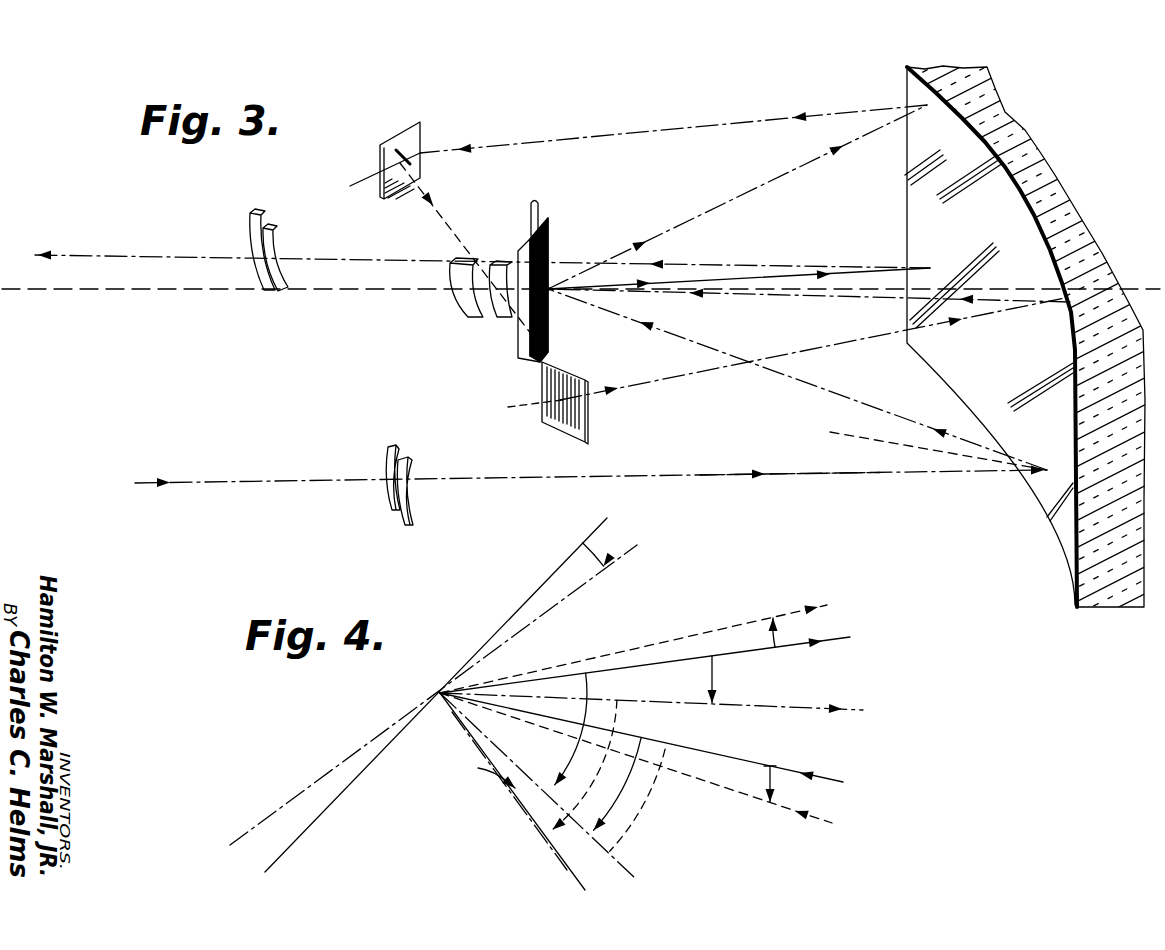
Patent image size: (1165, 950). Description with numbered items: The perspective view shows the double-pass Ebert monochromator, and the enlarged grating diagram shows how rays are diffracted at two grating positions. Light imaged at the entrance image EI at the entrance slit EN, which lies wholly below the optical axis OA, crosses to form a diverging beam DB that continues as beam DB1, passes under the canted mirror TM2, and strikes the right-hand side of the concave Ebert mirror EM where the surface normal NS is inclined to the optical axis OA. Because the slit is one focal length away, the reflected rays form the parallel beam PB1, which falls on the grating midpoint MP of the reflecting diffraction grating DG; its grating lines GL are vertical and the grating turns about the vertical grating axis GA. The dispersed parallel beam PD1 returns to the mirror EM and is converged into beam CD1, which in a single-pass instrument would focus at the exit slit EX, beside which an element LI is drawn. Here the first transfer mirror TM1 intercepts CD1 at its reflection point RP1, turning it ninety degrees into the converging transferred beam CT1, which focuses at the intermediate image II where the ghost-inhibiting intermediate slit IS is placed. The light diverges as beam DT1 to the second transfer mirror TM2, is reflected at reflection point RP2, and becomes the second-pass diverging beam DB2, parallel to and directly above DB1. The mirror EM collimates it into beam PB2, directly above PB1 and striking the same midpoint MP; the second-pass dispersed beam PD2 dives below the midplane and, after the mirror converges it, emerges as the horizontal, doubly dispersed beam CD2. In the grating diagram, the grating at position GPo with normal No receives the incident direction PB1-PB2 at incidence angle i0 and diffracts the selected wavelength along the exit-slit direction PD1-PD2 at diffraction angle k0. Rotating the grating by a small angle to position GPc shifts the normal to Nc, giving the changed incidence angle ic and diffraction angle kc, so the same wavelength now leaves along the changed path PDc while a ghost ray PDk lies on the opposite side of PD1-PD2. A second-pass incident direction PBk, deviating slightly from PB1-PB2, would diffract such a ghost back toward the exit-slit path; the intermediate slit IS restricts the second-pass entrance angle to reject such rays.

In FIG. 3, the Ebert mirror EM is at (1012, 118).
In FIG. 3, the optical axis OA is at (58, 290).
In FIG. 3, the converging dispersed beam CD1 is at (598, 133).
In FIG. 3, the converging doubly dispersed beam CD2 is at (128, 256).
In FIG. 3, the first-pass parallel dispersed beam PD1 is at (732, 198).
In FIG. 3, the second-pass parallel dispersed beam PD2 is at (773, 282).
In FIG. 3, the first-pass parallel beam PB1 is at (808, 388).
In FIG. 3, the second-pass parallel beam PB2 is at (820, 298).
In FIG. 3, the diverging beam DB is at (218, 487).
In FIG. 3, the first-pass diverging beam DB1 is at (812, 476).
In FIG. 3, the second-pass diverging beam DB2 is at (689, 374).
In FIG. 3, the normal to the mirror surface NS is at (923, 453).
In FIG. 3, the first transfer mirror TM1 is at (392, 140).
In FIG. 3, the second transfer mirror TM2 is at (590, 425).
In FIG. 3, the reflection point of the first transfer mirror RP1 is at (376, 169).
In FIG. 3, the reflection point of the second transfer mirror RP2 is at (515, 408).
In FIG. 3, the converging transferred first beam CT1 is at (442, 214).
In FIG. 3, the diverging transferred beam DT1 is at (500, 338).
In FIG. 3, the exit slit EX is at (245, 217).
In FIG. 3, the exit lens LI is at (272, 224).
In FIG. 3, the intermediate image II is at (470, 262).
In FIG. 3, the intermediate slit IS is at (455, 305).
In FIG. 3, the entrance image EI is at (402, 453).
In FIG. 3, the entrance slit EN is at (390, 508).
In FIG. 3, the grating axis GA is at (531, 212).
In FIG. 3, the diffraction grating DG is at (549, 236).
In FIG. 3, the grating lines GL is at (553, 264).
In FIG. 3, the grating midpoint MP is at (552, 306).
In FIG. 4, the original grating position GPo is at (292, 843).
In FIG. 4, the changed grating position GPc is at (296, 793).
In FIG. 4, the ghost ray PDk is at (738, 622).
In FIG. 4, the exit-slit diffracted ray path PD1-PD2 is at (832, 640).
In FIG. 4, the changed diffracted path PDc is at (845, 710).
In FIG. 4, the incident ray direction PB1-PB2 is at (812, 775).
In FIG. 4, the second-pass incident ray direction PBk is at (808, 822).
In FIG. 4, the changed grating normal Nc is at (566, 869).
In FIG. 4, the grating normal No is at (630, 870).
In FIG. 4, the angle of diffraction k0 is at (574, 752).
In FIG. 4, the changed angle of diffraction kc is at (599, 771).
In FIG. 4, the angle of incidence i0 is at (624, 787).
In FIG. 4, the changed angle of incidence ic is at (645, 813).